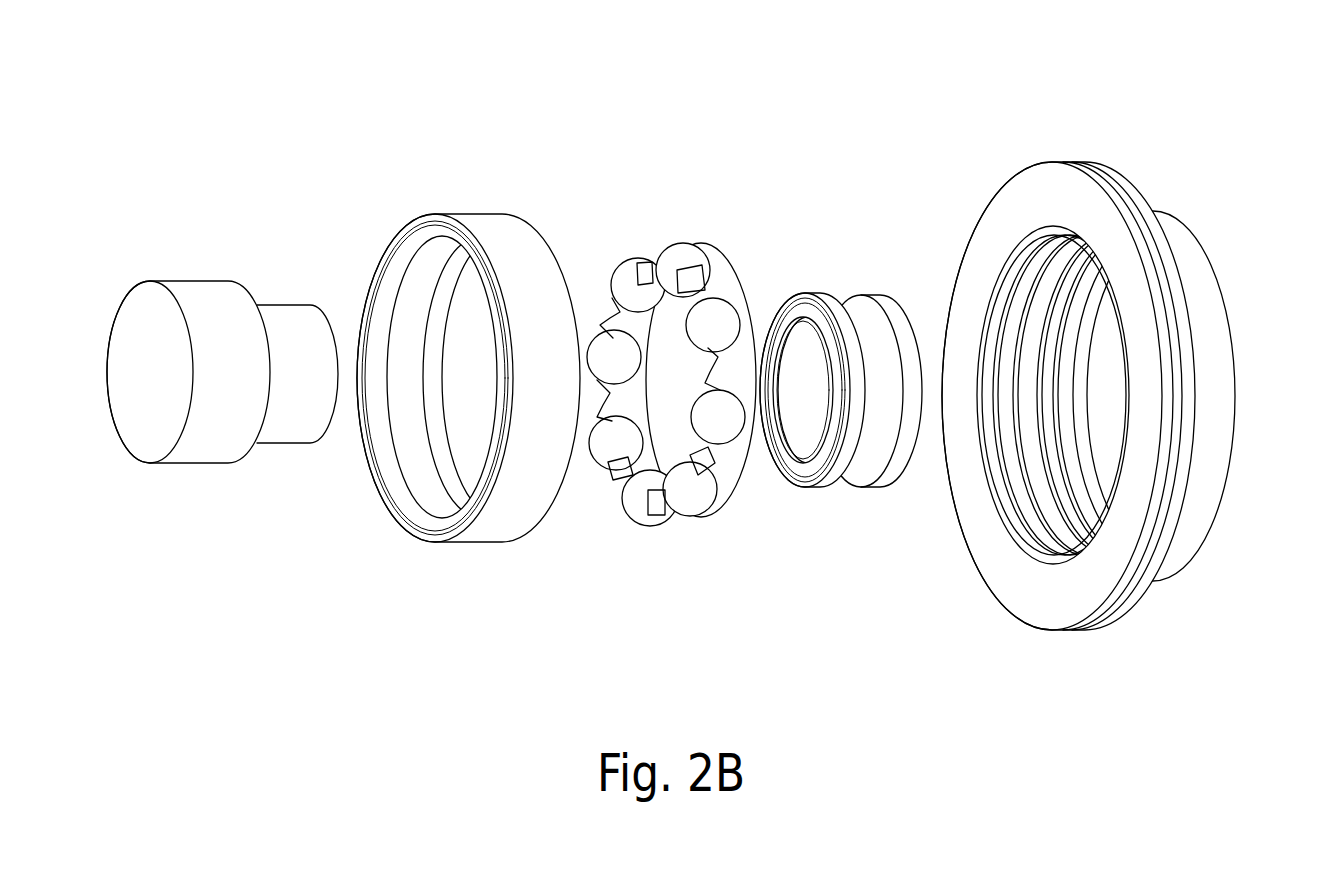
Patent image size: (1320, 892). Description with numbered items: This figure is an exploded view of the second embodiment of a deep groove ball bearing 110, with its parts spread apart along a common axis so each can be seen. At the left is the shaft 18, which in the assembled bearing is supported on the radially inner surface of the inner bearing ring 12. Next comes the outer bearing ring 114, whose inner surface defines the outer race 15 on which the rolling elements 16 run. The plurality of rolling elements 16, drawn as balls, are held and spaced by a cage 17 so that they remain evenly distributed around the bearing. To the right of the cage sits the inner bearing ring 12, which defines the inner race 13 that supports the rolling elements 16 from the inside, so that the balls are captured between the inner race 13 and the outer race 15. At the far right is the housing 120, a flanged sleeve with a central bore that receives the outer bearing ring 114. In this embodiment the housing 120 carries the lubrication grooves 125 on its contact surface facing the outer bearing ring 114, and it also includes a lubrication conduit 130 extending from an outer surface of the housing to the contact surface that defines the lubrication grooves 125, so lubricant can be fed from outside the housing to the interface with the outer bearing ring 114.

The inner bearing ring 12 is at (797, 472).
The inner race 13 is at (862, 472).
The outer race 15 is at (442, 257).
The rolling elements 16 is at (685, 252).
The cage 17 is at (718, 277).
The shaft 18 is at (202, 296).
The deep groove ball bearing 110 is at (639, 344).
The outer bearing ring 114 is at (468, 335).
The housing 120 is at (1101, 351).
The lubrication grooves 125 is at (1024, 502).
The lubrication conduit 130 is at (1054, 358).